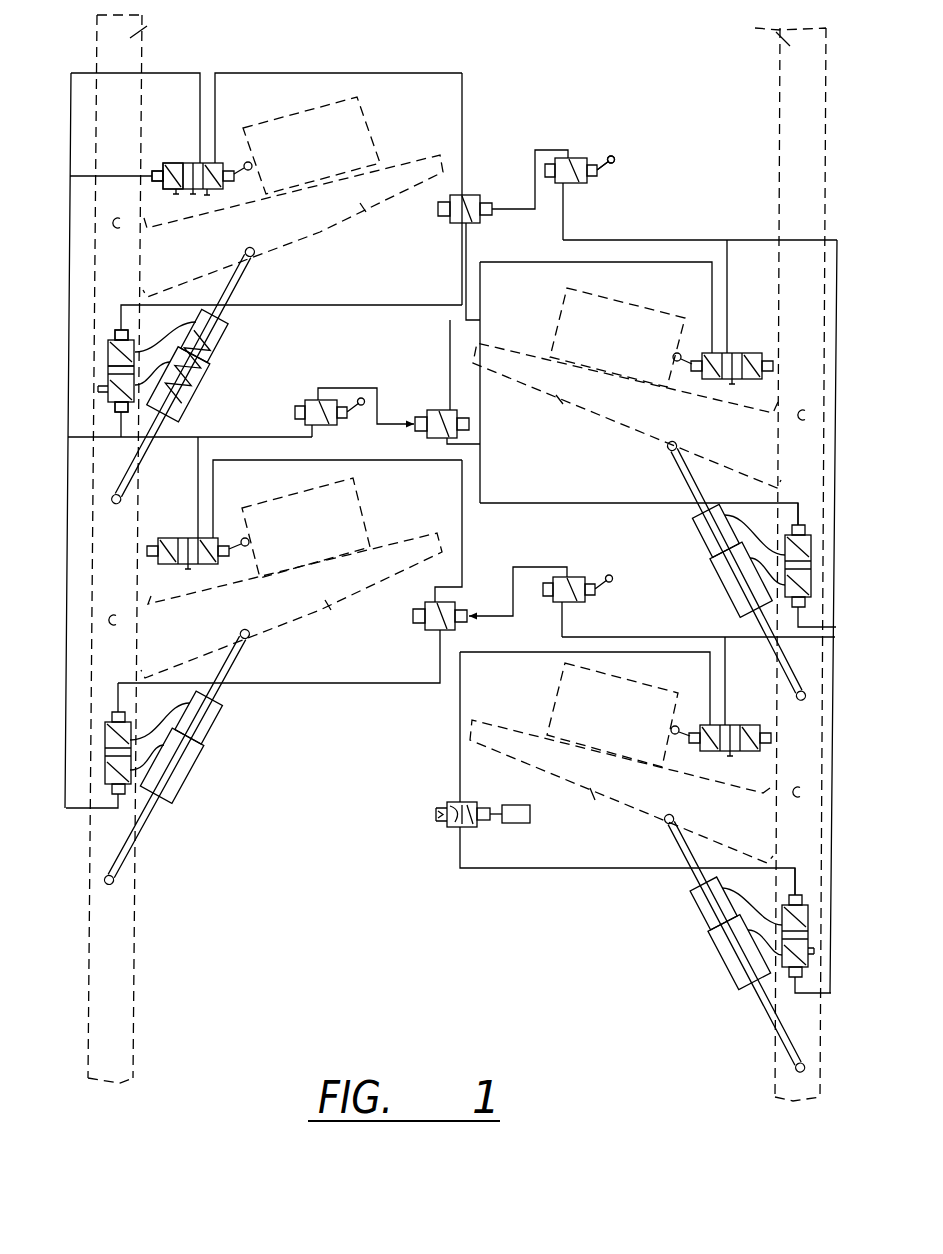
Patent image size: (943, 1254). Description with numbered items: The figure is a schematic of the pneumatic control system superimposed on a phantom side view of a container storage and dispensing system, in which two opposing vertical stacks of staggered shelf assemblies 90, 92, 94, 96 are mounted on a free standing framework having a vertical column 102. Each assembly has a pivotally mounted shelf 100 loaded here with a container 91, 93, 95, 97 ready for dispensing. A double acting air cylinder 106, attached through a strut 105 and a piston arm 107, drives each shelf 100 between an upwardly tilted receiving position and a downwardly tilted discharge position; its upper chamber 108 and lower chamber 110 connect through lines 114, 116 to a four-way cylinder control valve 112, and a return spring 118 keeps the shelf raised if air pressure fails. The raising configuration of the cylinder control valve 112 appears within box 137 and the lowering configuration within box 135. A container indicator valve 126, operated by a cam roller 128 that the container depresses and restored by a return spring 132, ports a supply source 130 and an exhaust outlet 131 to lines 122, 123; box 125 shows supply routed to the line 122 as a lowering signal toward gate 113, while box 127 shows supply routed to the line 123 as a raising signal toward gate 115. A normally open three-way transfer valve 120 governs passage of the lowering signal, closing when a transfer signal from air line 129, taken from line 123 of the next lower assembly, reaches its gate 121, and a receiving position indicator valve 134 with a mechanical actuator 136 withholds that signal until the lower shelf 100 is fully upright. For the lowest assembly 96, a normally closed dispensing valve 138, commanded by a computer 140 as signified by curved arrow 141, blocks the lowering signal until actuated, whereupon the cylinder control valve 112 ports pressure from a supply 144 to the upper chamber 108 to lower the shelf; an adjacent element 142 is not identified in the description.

The shelf assembly 90 is at (442, 65).
The container 91 is at (317, 156).
The shelf assembly 92 is at (670, 195).
The container 93 is at (625, 343).
The shelf assembly 94 is at (261, 747).
The container 95 is at (317, 533).
The shelf assembly 96 is at (493, 905).
The container 97 is at (633, 728).
The shelf 100 is at (364, 210).
The column 102 is at (133, 38).
The strut 105 is at (137, 468).
The air cylinder 106 is at (455, 660).
The piston arm 107 is at (238, 282).
The upper chamber 108 is at (228, 347).
The lower chamber 110 is at (180, 403).
The cylinder control valve 112 is at (107, 329).
The gate 113 is at (112, 340).
The line 114 is at (187, 358).
The gate 115 is at (93, 437).
The line 116 is at (120, 414).
The return spring 118 is at (190, 390).
The transfer valve 120 is at (461, 197).
The gate 121 is at (495, 200).
The line 122 is at (463, 107).
The line 123 is at (70, 253).
The box 125 is at (212, 194).
The container indicator valve 126 is at (173, 159).
The box 127 is at (162, 172).
The cam roller 128 is at (246, 161).
The air line 129 is at (273, 437).
The supply source 130 is at (205, 191).
The exhaust outlet 131 is at (70, 176).
The return spring 132 is at (150, 176).
The receiving position indicator valve 134 is at (579, 158).
The box 135 is at (110, 350).
The mechanical actuator 136 is at (608, 163).
The box 137 is at (98, 390).
The dispensing valve 138 is at (443, 869).
The computer 140 is at (516, 804).
The curved arrow 141 is at (446, 823).
The outlet port 142 is at (482, 822).
The supply 144 is at (814, 952).